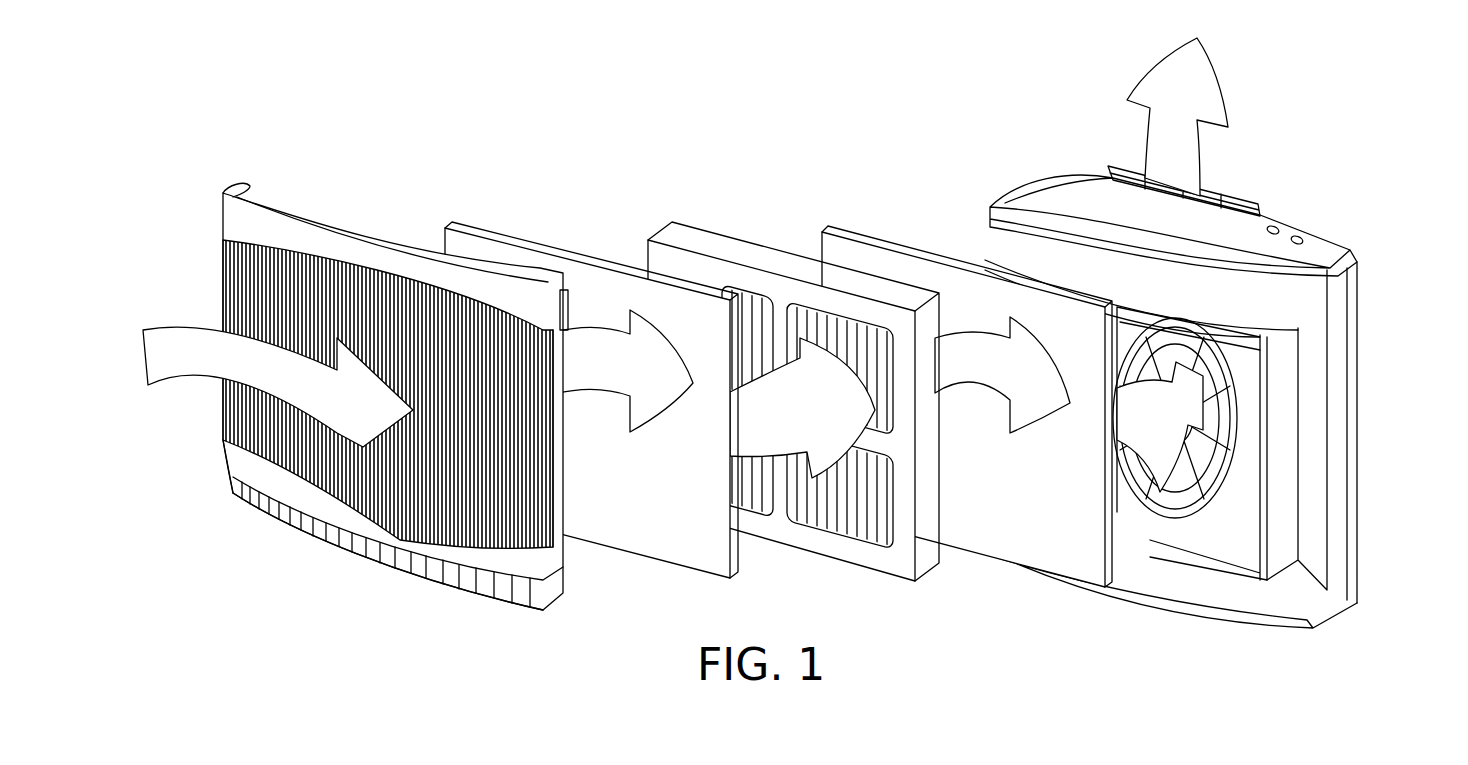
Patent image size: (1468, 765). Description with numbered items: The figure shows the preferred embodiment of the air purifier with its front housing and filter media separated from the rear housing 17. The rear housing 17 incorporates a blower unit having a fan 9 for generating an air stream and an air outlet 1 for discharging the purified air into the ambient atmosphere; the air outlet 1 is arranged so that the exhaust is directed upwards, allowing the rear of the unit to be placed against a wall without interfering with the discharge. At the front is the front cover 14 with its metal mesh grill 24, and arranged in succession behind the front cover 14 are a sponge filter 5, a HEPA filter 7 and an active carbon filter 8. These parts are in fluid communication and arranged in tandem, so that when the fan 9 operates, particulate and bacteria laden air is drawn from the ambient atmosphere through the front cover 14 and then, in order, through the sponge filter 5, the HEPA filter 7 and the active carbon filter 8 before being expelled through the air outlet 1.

The air outlet 1 is at (1190, 333).
The sponge filter 5 is at (500, 253).
The HEPA filter 7 is at (753, 257).
The active carbon filter 8 is at (930, 267).
The fan 9 is at (1223, 467).
The front cover 14 is at (345, 376).
The rear housing 17 is at (1337, 367).
The metal mesh grill 24 is at (253, 433).